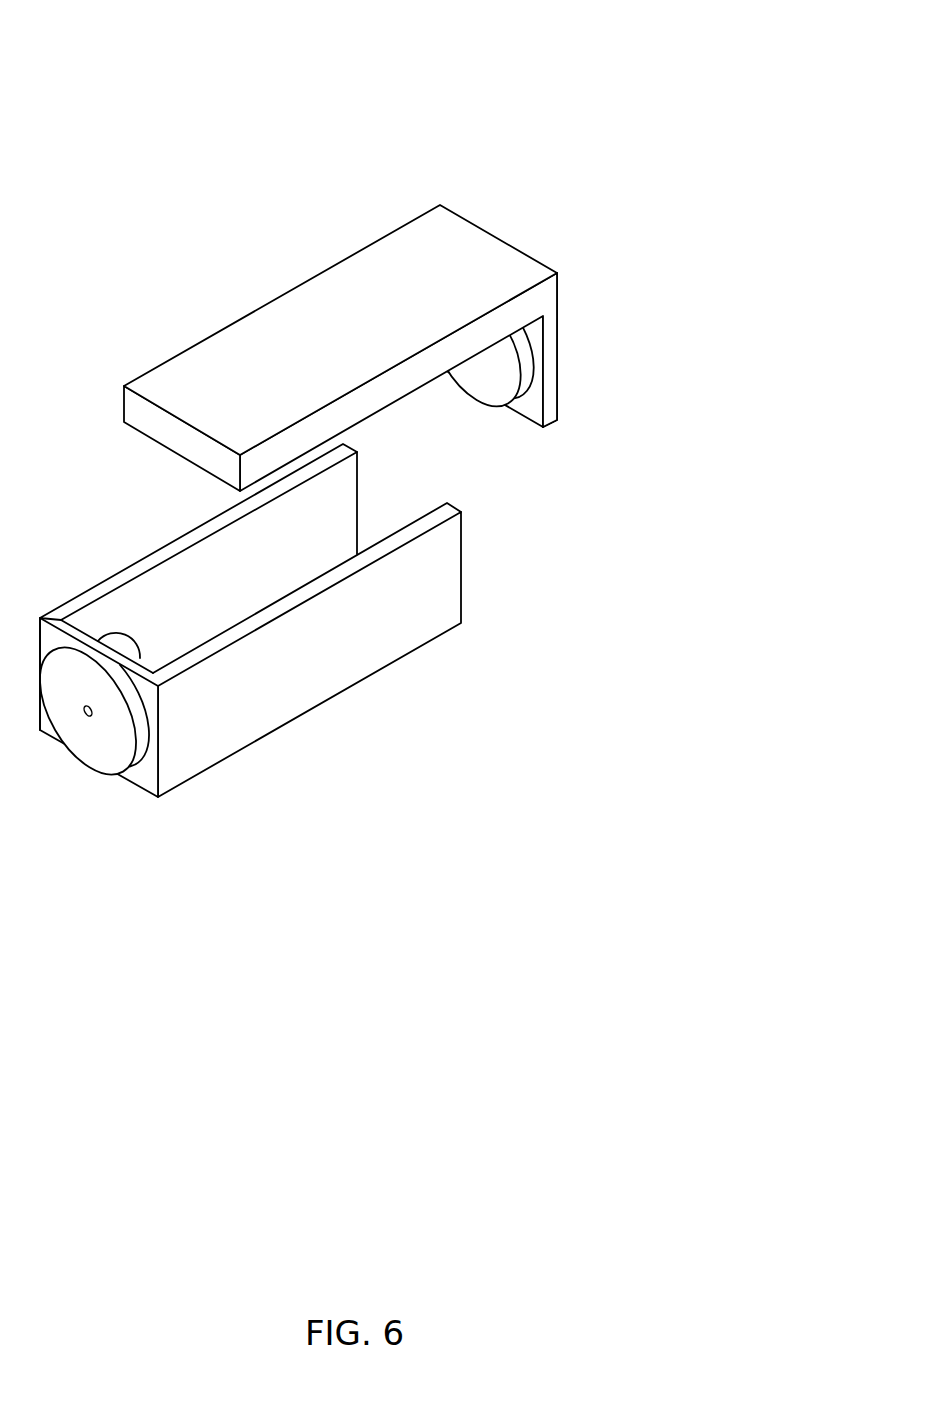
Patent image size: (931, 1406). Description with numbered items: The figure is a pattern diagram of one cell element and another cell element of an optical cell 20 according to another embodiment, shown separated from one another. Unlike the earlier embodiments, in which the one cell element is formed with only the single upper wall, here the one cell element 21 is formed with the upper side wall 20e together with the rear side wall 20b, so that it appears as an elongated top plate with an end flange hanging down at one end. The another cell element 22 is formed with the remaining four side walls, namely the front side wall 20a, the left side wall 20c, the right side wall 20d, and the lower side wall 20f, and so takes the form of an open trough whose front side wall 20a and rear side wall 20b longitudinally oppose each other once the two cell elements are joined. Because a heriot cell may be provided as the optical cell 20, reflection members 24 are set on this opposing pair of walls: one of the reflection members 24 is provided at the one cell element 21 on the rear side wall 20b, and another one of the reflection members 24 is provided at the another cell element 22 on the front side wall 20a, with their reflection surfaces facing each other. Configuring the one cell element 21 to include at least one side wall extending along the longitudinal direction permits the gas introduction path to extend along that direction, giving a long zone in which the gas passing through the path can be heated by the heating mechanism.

The optical cell 20 is at (497, 108).
The one cell element 21 is at (500, 237).
The another cell element 22 is at (440, 637).
The reflection member 24 is at (490, 403).
The front side wall 20a is at (141, 783).
The rear side wall 20b is at (560, 371).
The left side wall 20c is at (288, 710).
The right side wall 20d is at (112, 576).
The upper side wall 20e is at (178, 353).
The lower side wall 20f is at (360, 549).